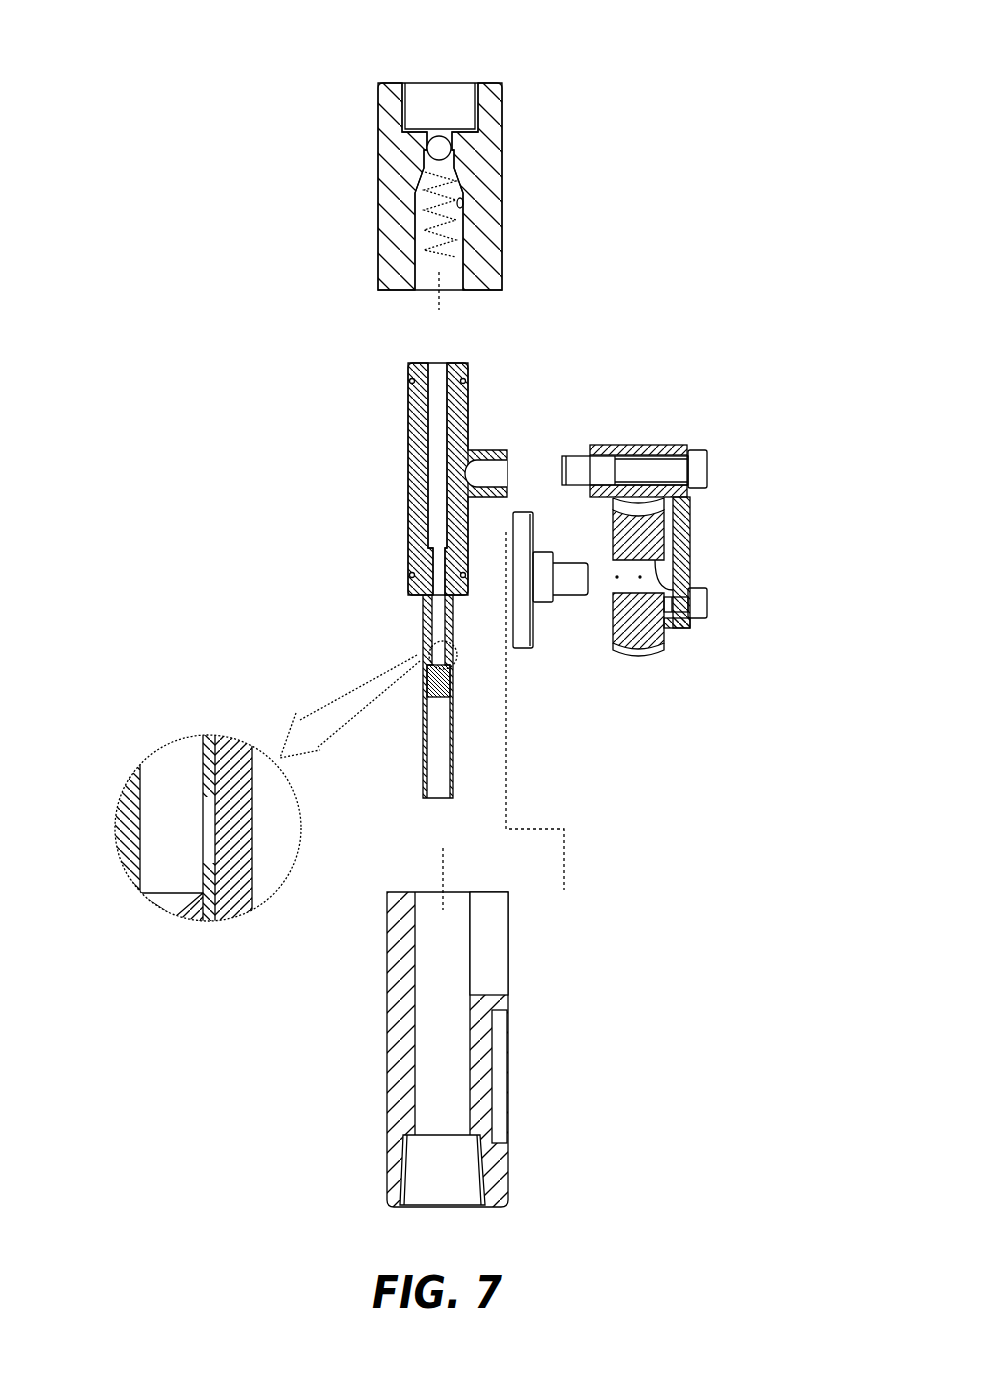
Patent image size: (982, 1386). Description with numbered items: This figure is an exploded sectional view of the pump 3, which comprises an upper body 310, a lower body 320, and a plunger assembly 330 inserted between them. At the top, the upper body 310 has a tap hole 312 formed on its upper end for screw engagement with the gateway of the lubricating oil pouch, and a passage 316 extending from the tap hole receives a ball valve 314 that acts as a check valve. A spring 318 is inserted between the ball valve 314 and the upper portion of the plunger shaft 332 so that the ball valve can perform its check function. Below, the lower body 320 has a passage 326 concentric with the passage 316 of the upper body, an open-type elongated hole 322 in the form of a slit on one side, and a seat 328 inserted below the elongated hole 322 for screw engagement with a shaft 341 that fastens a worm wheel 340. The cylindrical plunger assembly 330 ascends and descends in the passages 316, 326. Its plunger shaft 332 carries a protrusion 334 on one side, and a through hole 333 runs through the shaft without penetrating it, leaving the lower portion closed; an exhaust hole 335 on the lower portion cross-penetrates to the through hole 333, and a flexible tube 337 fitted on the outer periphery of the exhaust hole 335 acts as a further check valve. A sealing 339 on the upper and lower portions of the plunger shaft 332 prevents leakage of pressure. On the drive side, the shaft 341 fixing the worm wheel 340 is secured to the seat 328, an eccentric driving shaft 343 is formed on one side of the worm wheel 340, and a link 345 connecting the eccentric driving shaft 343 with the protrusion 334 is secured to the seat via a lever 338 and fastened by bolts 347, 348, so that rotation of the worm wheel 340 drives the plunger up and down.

The pump 3 is at (520, 257).
The upper body 310 is at (388, 267).
The tap hole 312 is at (415, 97).
The ball valve 314 is at (433, 147).
The passage 316 is at (463, 205).
The spring 318 is at (423, 225).
The lower body 320 is at (393, 975).
The elongated hole 322 is at (495, 958).
The passage 326 is at (418, 1085).
The seat 328 is at (503, 1083).
The plunger assembly 330 is at (458, 662).
The plunger shaft 332 is at (408, 410).
The through hole 333 is at (433, 450).
The protrusion 334 is at (487, 448).
The exhaust hole 335 is at (455, 657).
The flexible tube 337 is at (422, 755).
The lever 338 is at (645, 445).
The sealing 339 is at (467, 383).
The worm wheel 340 is at (653, 540).
The shaft 341 is at (545, 605).
The eccentric driving shaft 343 is at (667, 628).
The link 345 is at (685, 513).
The bolt 347 is at (702, 467).
The bolt 348 is at (700, 602).